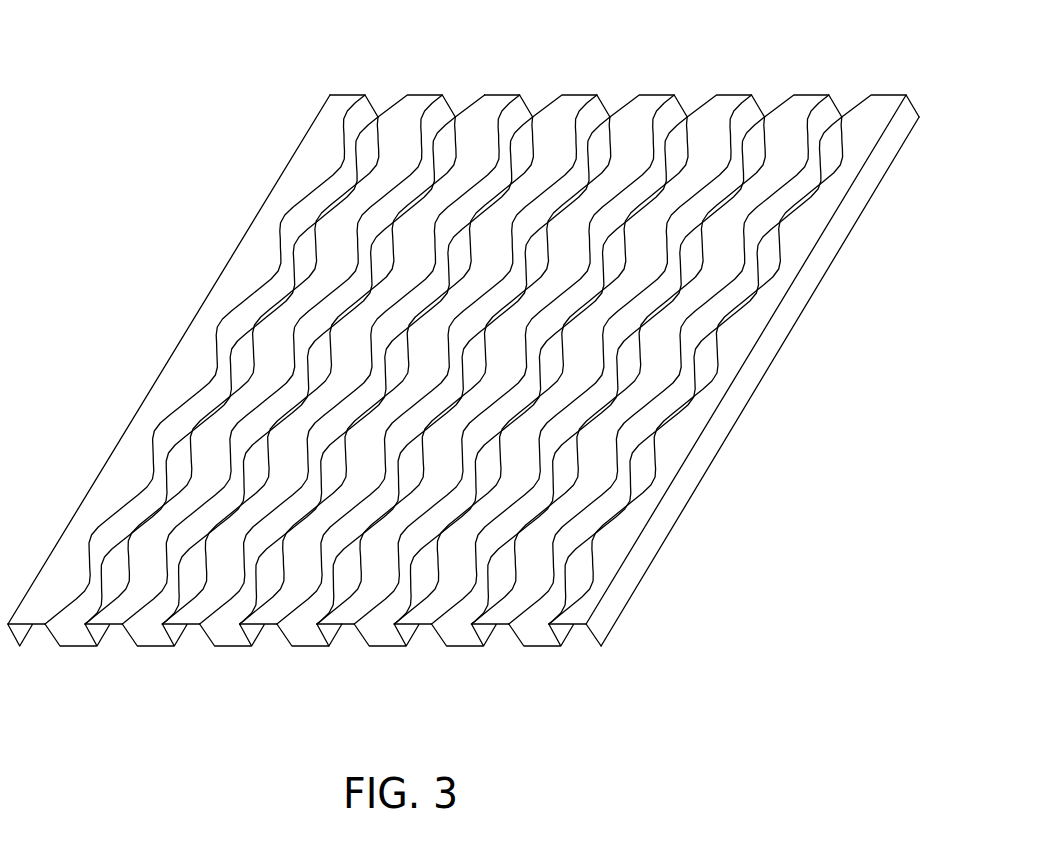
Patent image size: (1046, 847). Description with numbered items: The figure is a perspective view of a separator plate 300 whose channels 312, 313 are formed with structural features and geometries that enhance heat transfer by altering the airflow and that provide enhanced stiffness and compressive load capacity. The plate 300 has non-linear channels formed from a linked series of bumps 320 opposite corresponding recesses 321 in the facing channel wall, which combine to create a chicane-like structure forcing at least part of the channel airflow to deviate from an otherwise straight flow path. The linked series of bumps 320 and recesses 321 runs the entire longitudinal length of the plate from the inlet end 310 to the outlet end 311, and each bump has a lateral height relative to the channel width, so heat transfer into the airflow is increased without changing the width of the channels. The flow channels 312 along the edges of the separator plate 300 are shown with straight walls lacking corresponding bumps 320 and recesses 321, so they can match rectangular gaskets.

The separator plate 300 is at (203, 148).
The outlet end 311 is at (502, 94).
The inlet end 310 is at (155, 648).
The flow channels 312 is at (197, 640).
The channels 313 is at (315, 643).
The bumps 320 is at (147, 488).
The recesses 321 is at (172, 468).